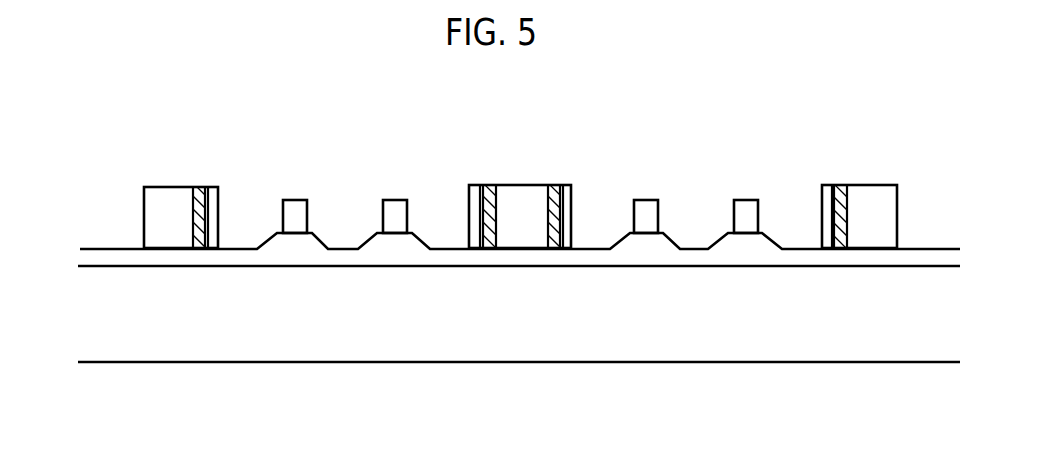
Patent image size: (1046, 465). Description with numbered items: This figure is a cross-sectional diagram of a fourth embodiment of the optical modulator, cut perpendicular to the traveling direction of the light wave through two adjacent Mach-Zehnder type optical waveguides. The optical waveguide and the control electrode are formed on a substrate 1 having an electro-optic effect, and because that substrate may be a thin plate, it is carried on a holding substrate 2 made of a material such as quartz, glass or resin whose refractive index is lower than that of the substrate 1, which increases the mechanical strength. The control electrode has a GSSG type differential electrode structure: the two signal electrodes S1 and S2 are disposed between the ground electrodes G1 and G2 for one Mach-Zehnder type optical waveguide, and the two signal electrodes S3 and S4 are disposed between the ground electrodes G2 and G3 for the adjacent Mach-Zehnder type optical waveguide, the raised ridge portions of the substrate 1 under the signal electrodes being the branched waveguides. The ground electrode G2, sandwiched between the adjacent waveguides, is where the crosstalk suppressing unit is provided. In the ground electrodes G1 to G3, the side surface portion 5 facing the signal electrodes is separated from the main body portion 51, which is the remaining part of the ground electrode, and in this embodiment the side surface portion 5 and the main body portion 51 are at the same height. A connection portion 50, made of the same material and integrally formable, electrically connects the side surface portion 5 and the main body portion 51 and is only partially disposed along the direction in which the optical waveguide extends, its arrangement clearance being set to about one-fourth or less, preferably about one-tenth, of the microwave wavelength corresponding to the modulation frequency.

The substrate 1 is at (240, 257).
The holding substrate 2 is at (473, 336).
The side surface portion 5 is at (210, 186).
The connection portion 50 is at (196, 186).
The main body portion 51 is at (308, 285).
The ground electrode G1 is at (181, 195).
The ground electrode G2 is at (520, 196).
The ground electrode G3 is at (859, 195).
The signal electrode S1 is at (293, 196).
The signal electrode S2 is at (395, 196).
The signal electrode S3 is at (646, 196).
The signal electrode S4 is at (746, 196).